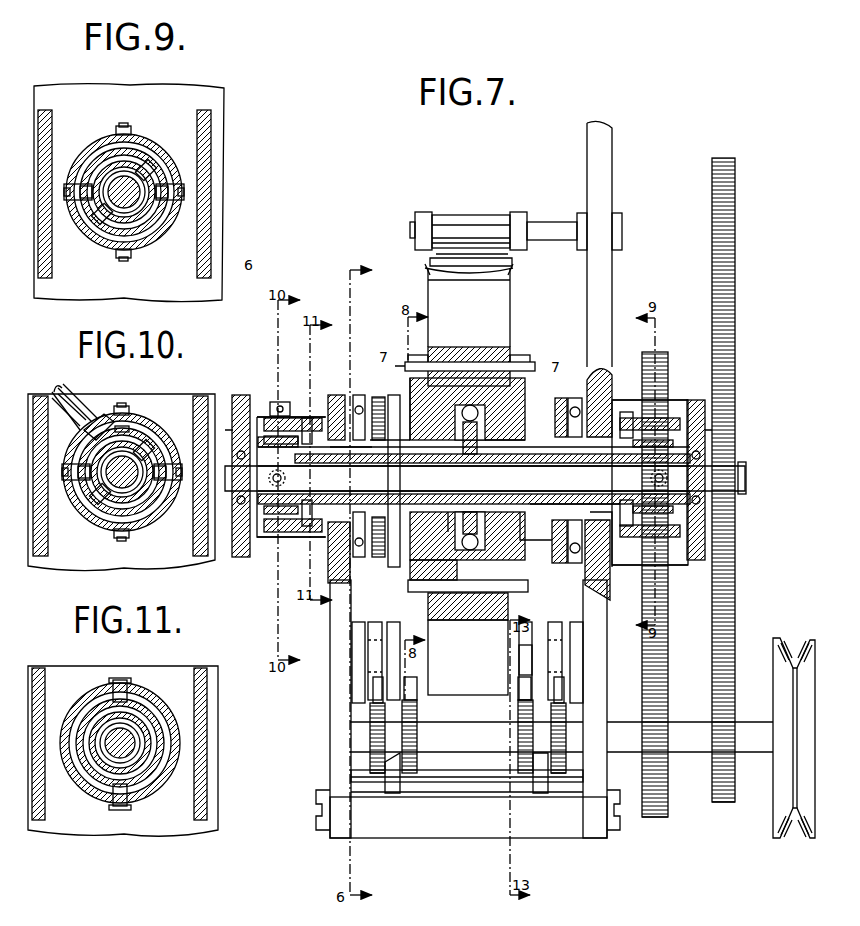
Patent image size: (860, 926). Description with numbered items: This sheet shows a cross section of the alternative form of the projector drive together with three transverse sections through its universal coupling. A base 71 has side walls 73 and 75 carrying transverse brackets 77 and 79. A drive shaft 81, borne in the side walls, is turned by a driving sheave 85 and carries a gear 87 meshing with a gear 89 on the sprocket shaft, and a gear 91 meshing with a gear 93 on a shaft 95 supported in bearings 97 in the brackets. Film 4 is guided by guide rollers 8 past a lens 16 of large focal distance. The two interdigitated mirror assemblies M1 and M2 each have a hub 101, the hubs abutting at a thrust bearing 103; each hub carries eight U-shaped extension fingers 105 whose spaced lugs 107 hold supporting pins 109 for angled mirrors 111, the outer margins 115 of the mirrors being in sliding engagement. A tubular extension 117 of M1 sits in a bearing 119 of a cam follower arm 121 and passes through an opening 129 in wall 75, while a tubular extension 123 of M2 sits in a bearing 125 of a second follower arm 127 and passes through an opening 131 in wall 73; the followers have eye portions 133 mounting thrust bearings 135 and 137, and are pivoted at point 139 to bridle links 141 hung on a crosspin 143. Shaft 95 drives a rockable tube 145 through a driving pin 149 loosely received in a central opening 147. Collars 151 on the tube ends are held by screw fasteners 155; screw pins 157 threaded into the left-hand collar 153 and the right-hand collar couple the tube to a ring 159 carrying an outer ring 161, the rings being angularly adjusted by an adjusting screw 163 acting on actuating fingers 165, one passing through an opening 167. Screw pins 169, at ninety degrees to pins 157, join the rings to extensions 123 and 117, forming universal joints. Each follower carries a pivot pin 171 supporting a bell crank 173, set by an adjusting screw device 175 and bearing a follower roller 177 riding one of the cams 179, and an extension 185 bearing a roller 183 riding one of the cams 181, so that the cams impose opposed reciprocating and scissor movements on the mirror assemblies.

In FIG. 7, the film 4 is at (440, 252).
In FIG. 7, the guide rollers 8 is at (446, 220).
In FIG. 7, the lens 16 is at (466, 278).
In FIG. 7, the base 71 is at (446, 832).
In FIG. 10, the side wall 73 is at (56, 562).
In FIG. 11, the side wall 73 is at (164, 828).
In FIG. 7, the side wall 73 is at (322, 828).
In FIG. 9, the side wall 75 is at (193, 98).
In FIG. 7, the side wall 75 is at (602, 826).
In FIG. 7, the transverse bracket 77 is at (242, 552).
In FIG. 7, the transverse bracket 79 is at (696, 566).
In FIG. 7, the drive shaft 81 is at (690, 746).
In FIG. 7, the driving sheave 85 is at (808, 648).
In FIG. 7, the gear 87 is at (660, 814).
In FIG. 7, the gear 89 is at (670, 615).
In FIG. 7, the gear 91 is at (727, 752).
In FIG. 7, the gear 93 is at (736, 584).
In FIG. 9, the shaft 95 is at (142, 180).
In FIG. 10, the shaft 95 is at (142, 488).
In FIG. 11, the shaft 95 is at (140, 733).
In FIG. 7, the shaft 95 is at (748, 475).
In FIG. 7, the bearings 97 is at (246, 440).
In FIG. 7, the hub 101 is at (440, 463).
In FIG. 7, the thrust bearing 103 is at (448, 530).
In FIG. 7, the extension fingers 105 is at (467, 479).
In FIG. 7, the lugs 107 is at (426, 356).
In FIG. 7, the supporting pins 109 is at (470, 356).
In FIG. 7, the angled mirrors 111 is at (502, 310).
In FIG. 7, the outer margins 115 is at (510, 262).
In FIG. 9, the tubular extension 117 is at (146, 226).
In FIG. 7, the tubular extension 117 is at (552, 526).
In FIG. 7, the bearing 119 is at (537, 537).
In FIG. 7, the cam follower arm 121 is at (560, 580).
In FIG. 10, the tubular extension 123 is at (92, 502).
In FIG. 11, the tubular extension 123 is at (90, 766).
In FIG. 7, the tubular extension 123 is at (376, 456).
In FIG. 7, the bearing 125 is at (392, 540).
In FIG. 7, the cam follower arm 127 is at (352, 568).
In FIG. 7, the opening 129 is at (608, 562).
In FIG. 7, the opening 131 is at (336, 398).
In FIG. 7, the eye portions 133 is at (378, 396).
In FIG. 7, the thrust bearing 135 is at (574, 408).
In FIG. 7, the thrust bearing 137 is at (361, 400).
In FIG. 7, the pivot point 139 is at (350, 460).
In FIG. 7, the bridle link 141 is at (384, 420).
In FIG. 7, the crosspin 143 is at (470, 786).
In FIG. 9, the rockable tube 145 is at (110, 240).
In FIG. 10, the rockable tube 145 is at (152, 508).
In FIG. 11, the rockable tube 145 is at (156, 770).
In FIG. 7, the rockable tube 145 is at (578, 500).
In FIG. 7, the central opening 147 is at (498, 460).
In FIG. 7, the driving pin 149 is at (462, 458).
In FIG. 9, the collars 151 is at (104, 152).
In FIG. 10, the collars 151 is at (164, 432).
In FIG. 7, the collars 151 is at (280, 524).
In FIG. 10, the collar 153 is at (132, 420).
In FIG. 9, the screw fasteners 155 is at (138, 148).
In FIG. 10, the screw fasteners 155 is at (142, 440).
In FIG. 9, the screw pins 157 is at (66, 184).
In FIG. 10, the screw pins 157 is at (176, 460).
In FIG. 7, the screw pins 157 is at (266, 477).
In FIG. 7, the ring 159 is at (268, 410).
In FIG. 7, the ring 161 is at (280, 545).
In FIG. 10, the adjusting screw 163 is at (70, 392).
In FIG. 7, the adjusting screw 163 is at (281, 400).
In FIG. 10, the actuating fingers 165 is at (56, 396).
In FIG. 10, the opening 167 is at (102, 418).
In FIG. 9, the screw pins 169 is at (120, 128).
In FIG. 10, the screw pins 169 is at (124, 404).
In FIG. 11, the screw pins 169 is at (114, 684).
In FIG. 7, the screw pins 169 is at (306, 420).
In FIG. 7, the pivot pin 171 is at (412, 688).
In FIG. 7, the bell crank 173 is at (352, 672).
In FIG. 7, the adjusting screw device 175 is at (368, 628).
In FIG. 7, the follower roller 177 is at (374, 710).
In FIG. 7, the cams 179 is at (372, 744).
In FIG. 7, the cams 181 is at (410, 728).
In FIG. 7, the rollers 183 is at (418, 680).
In FIG. 7, the extensions 185 is at (452, 640).
In FIG. 7, the mirror assembly M1 is at (540, 415).
In FIG. 7, the mirror assembly M2 is at (410, 410).